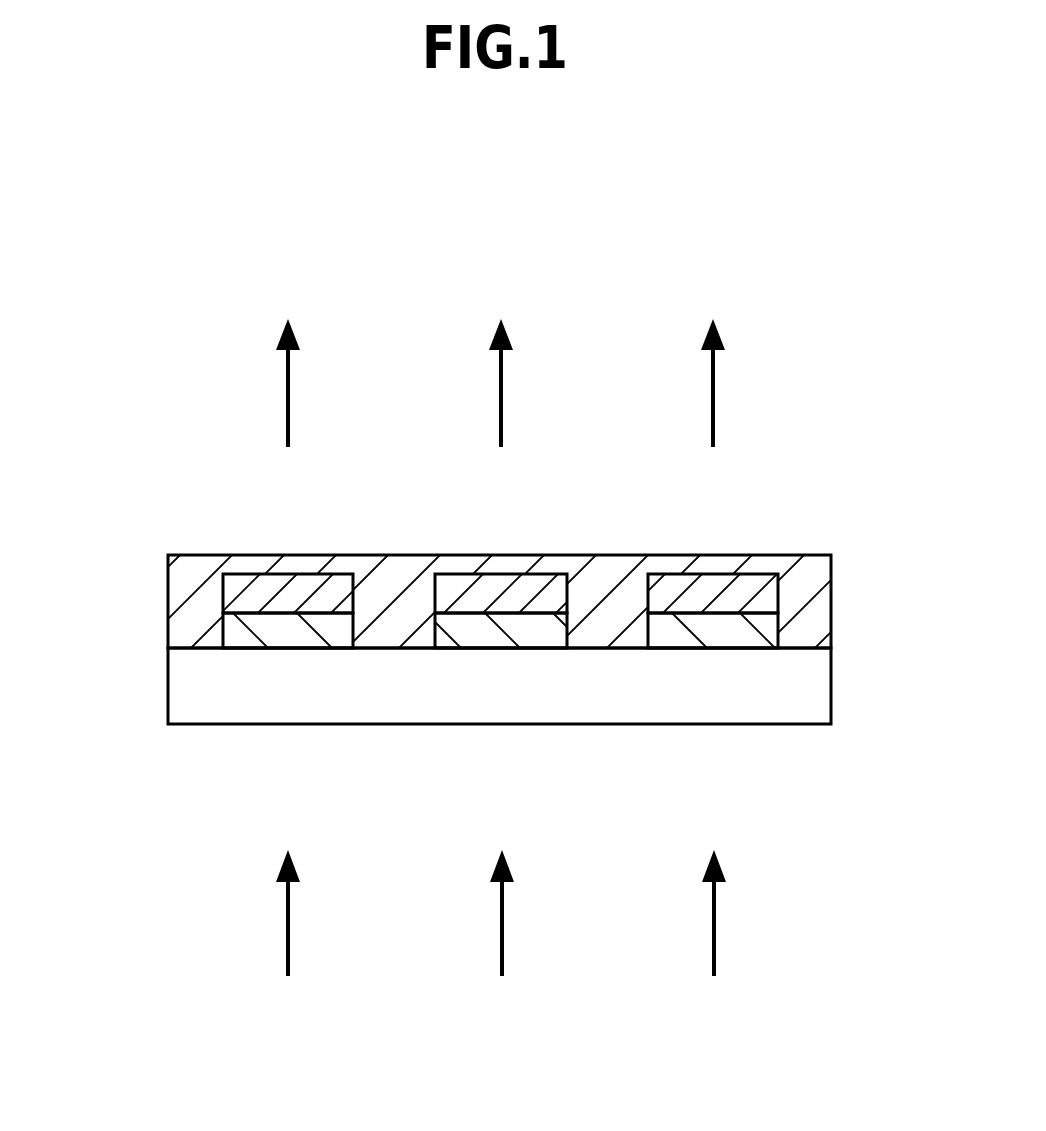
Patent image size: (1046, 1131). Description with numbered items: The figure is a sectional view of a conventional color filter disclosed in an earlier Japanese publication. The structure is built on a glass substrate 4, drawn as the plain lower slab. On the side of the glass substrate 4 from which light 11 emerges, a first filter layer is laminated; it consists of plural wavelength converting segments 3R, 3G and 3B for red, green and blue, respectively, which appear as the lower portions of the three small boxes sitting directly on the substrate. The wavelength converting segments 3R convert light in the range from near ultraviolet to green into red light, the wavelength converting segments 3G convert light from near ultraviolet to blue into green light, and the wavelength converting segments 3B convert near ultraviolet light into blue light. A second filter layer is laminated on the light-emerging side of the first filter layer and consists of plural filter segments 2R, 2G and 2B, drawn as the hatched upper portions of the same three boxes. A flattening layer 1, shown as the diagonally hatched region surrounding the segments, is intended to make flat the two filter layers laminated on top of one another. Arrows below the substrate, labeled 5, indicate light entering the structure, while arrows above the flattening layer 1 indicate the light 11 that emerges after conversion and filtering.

The flattening layer 1 is at (185, 587).
The filter segment for green 2G is at (297, 585).
The filter segment for red 2R is at (513, 580).
The filter segment for blue 2B is at (737, 588).
The wavelength converting segment for green 3G is at (262, 637).
The wavelength converting segment for red 3R is at (511, 640).
The wavelength converting segment for blue 3B is at (712, 638).
The glass substrate 4 is at (812, 710).
The incident light 5 is at (501, 947).
The light 11 is at (500, 353).